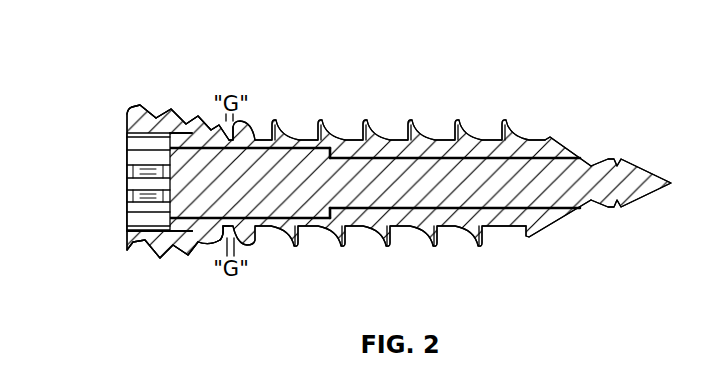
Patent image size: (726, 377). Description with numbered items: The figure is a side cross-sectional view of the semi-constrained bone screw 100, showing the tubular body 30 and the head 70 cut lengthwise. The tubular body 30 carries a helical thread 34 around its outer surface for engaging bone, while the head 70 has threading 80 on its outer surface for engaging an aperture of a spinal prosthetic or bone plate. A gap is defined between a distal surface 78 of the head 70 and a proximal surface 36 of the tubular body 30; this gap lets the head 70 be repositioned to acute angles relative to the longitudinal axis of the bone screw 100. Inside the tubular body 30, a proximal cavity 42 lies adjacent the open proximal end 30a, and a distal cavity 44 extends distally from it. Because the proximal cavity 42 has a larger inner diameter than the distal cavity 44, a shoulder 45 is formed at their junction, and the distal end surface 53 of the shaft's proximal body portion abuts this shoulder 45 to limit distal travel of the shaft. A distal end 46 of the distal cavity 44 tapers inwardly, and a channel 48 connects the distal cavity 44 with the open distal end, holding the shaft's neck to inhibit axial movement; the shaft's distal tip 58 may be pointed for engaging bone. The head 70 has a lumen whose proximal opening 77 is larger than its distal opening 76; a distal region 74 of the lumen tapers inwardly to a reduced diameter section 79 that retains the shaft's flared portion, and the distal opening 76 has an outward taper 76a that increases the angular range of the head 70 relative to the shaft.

The semi-constrained bone screw 100 is at (538, 105).
The tubular body 30 is at (474, 242).
The open proximal end 30a is at (248, 131).
The helical thread 34 is at (416, 122).
The proximal surface 36 is at (250, 247).
The proximal cavity 42 is at (290, 127).
The distal cavity 44 is at (408, 228).
The shoulder 45 is at (331, 224).
The distal end of distal cavity 46 is at (587, 159).
The channel 48 is at (600, 208).
The distal end surface 53 is at (331, 138).
The distal tip 58 is at (648, 166).
The head 70 is at (118, 121).
The distal region of lumen 74 is at (189, 123).
The distal opening 76 is at (210, 241).
The taper 76a is at (218, 240).
The proximal opening 77 is at (140, 236).
The distal surface 78 is at (238, 127).
The reduced diameter section 79 is at (185, 228).
The threading 80 is at (171, 108).